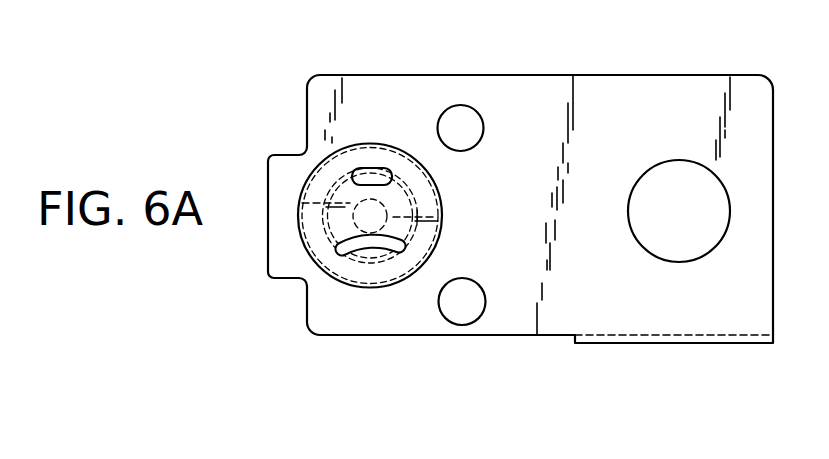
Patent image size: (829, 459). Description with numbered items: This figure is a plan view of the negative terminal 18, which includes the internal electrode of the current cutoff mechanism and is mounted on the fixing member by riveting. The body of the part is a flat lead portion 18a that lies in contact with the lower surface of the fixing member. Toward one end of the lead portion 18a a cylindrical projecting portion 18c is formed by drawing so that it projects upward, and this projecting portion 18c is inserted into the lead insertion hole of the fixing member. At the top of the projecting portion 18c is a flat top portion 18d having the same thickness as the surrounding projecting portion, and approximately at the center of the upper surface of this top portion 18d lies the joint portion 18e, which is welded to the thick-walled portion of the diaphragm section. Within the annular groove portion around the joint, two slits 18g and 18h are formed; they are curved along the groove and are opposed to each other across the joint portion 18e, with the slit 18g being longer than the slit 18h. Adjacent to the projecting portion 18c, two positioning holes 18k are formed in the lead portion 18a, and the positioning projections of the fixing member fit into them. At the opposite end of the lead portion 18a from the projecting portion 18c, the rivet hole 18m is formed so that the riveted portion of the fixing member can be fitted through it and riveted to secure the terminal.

The negative terminal 18 is at (276, 94).
The lead portion 18a is at (598, 148).
The projecting portion 18c is at (306, 248).
The top portion 18d is at (404, 171).
The joint portion 18e is at (380, 215).
The slit 18g is at (373, 256).
The slit 18h is at (372, 174).
The positioning holes 18k is at (461, 128).
The rivet hole 18m is at (682, 208).